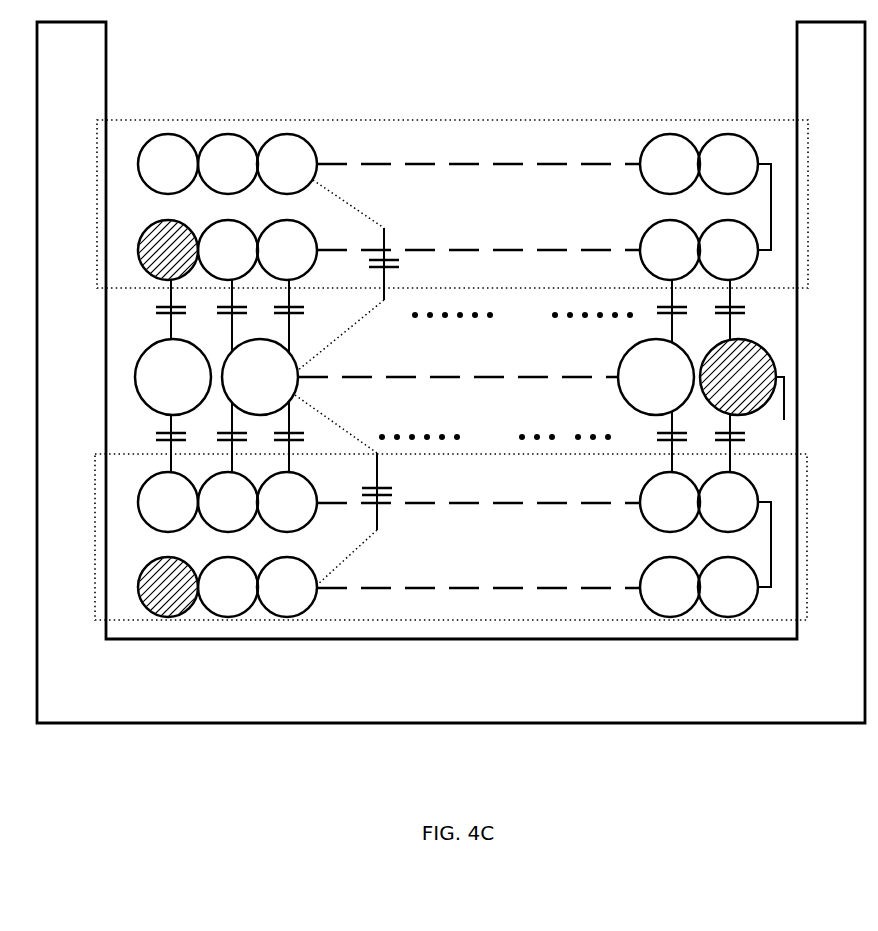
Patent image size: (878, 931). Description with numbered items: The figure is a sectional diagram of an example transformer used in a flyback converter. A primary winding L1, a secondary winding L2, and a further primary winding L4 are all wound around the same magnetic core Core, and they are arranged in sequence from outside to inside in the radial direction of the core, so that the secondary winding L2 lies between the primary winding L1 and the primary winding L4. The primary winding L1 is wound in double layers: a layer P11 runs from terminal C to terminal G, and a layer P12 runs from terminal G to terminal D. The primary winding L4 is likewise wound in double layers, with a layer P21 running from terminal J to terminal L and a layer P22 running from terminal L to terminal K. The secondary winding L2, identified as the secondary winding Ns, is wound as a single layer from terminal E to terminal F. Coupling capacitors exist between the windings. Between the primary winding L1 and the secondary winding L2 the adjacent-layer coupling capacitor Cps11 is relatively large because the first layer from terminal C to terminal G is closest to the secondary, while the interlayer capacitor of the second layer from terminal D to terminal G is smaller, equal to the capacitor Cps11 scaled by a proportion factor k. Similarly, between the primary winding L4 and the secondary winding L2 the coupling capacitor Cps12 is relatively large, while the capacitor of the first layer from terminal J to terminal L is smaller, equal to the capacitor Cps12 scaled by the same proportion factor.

The magnetic core Core is at (451, 372).
The primary winding L1 is at (452, 191).
The secondary winding L2 is at (458, 361).
The primary winding L4 is at (451, 537).
The terminal D is at (214, 164).
The terminal C is at (214, 249).
The terminal E is at (207, 377).
The terminal K is at (214, 502).
The terminal J is at (214, 586).
The layer P12 is at (745, 164).
The layer P11 is at (745, 250).
The layer P22 is at (745, 502).
The layer P21 is at (745, 587).
The terminal G is at (756, 207).
The terminal L is at (758, 544).
The terminal F is at (740, 378).
The secondary winding Ns is at (727, 377).
The coupling capacitor Cps11 is at (450, 316).
The coupling capacitor Cps12 is at (450, 430).